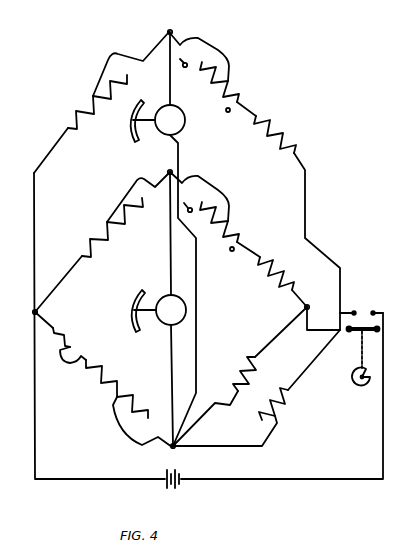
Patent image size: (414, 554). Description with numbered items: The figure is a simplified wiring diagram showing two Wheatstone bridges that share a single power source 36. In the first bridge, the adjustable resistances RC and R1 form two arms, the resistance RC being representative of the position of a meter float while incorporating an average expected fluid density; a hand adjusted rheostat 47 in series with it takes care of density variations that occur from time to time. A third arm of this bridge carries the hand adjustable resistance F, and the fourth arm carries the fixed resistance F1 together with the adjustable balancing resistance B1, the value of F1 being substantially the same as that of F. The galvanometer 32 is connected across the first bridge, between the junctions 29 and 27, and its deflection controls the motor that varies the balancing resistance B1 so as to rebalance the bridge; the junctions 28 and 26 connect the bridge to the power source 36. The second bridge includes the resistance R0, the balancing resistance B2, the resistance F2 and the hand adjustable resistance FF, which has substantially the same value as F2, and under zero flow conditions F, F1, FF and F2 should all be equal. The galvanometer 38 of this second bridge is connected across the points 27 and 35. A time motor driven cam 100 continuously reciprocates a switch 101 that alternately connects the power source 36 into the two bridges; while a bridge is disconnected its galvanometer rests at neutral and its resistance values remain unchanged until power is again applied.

The bridge point 35 is at (168, 25).
The bridge junction 29 is at (163, 165).
The bridge left junction 28 is at (25, 313).
The bridge right junction 26 is at (319, 307).
The bridge point 27 is at (183, 453).
The galvanometer 38 is at (185, 120).
The galvanometer 32 is at (162, 323).
The power source 36 is at (184, 485).
The hand adjusted rheostat 47 is at (61, 337).
The switch 101 is at (378, 329).
The time motor driven cam 100 is at (364, 370).
The resistance RO R0 is at (101, 102).
The resistance RI R1 is at (102, 242).
The resistance RC is at (126, 403).
The balancing resistance B1 is at (215, 214).
The resistance B2 is at (212, 74).
The fixed resistance F1 is at (282, 278).
The resistance F2 is at (275, 131).
The hand adjustable resistance F is at (240, 376).
The hand adjustable resistance FF is at (256, 388).